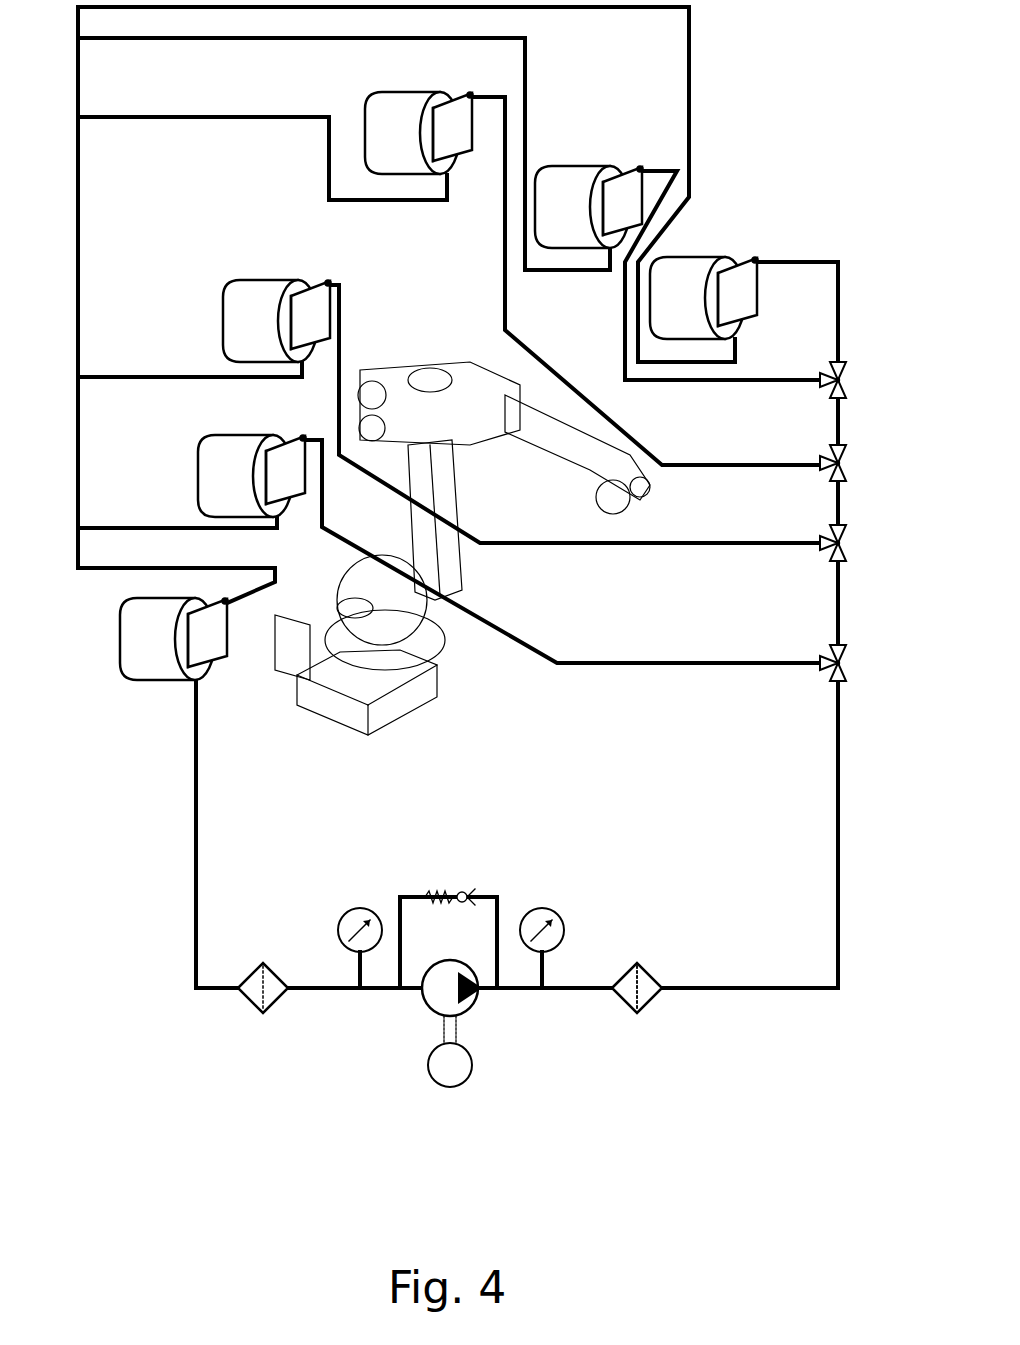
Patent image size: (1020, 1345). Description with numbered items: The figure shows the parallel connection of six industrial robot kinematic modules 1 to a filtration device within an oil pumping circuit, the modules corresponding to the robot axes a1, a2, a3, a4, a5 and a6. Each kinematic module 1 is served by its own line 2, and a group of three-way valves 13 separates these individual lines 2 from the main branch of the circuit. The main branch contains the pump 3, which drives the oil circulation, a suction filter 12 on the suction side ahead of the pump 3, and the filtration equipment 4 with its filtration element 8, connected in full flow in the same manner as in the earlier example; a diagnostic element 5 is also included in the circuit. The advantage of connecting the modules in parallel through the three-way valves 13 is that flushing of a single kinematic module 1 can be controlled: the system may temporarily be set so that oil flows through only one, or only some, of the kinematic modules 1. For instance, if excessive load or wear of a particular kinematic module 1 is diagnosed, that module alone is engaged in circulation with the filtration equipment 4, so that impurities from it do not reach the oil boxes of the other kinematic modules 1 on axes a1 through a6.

The kinematic module 1 is at (418, 371).
The line 2 is at (326, 154).
The pump 3 is at (468, 1010).
The filtration equipment 4 is at (633, 1013).
The diagnostic element 5 is at (545, 910).
The filtration element 8 is at (641, 980).
The suction filter 12 is at (262, 1013).
The three-way valve 13 is at (829, 389).
The axis 1 a1 is at (153, 639).
The axis 2 a2 is at (229, 476).
The axis 3 a3 is at (254, 321).
The axis 4 a4 is at (419, 118).
The axis 5 a5 is at (589, 192).
The axis 6 a6 is at (704, 284).